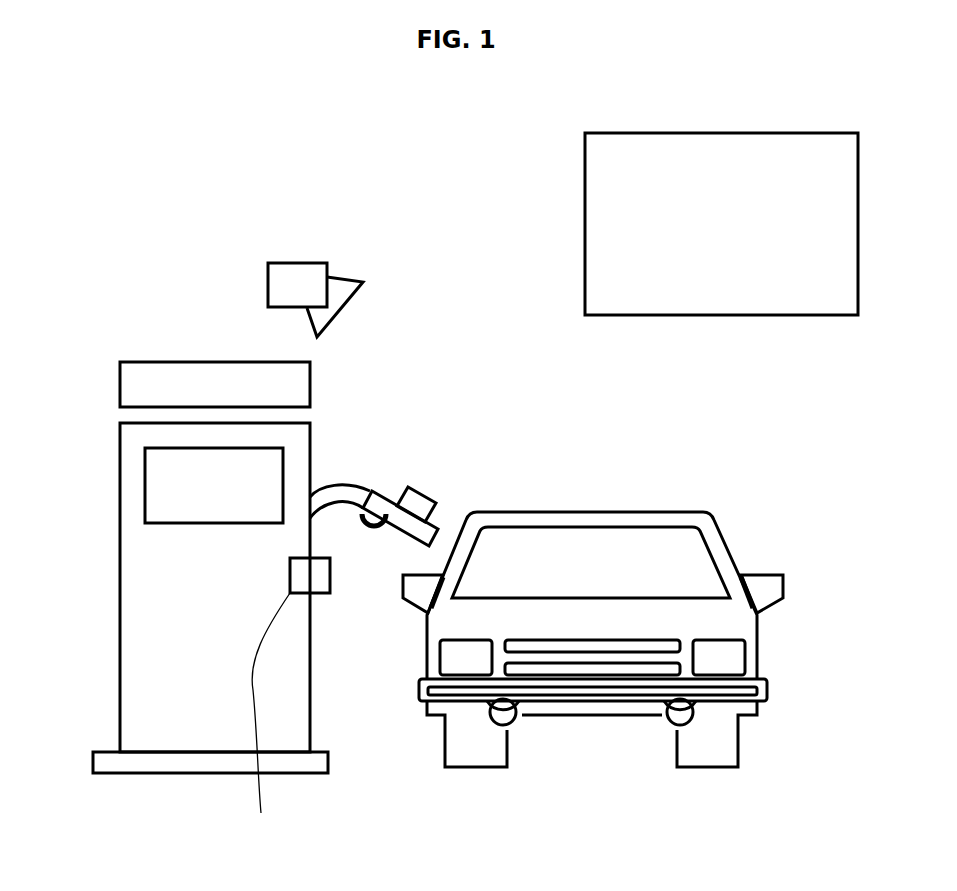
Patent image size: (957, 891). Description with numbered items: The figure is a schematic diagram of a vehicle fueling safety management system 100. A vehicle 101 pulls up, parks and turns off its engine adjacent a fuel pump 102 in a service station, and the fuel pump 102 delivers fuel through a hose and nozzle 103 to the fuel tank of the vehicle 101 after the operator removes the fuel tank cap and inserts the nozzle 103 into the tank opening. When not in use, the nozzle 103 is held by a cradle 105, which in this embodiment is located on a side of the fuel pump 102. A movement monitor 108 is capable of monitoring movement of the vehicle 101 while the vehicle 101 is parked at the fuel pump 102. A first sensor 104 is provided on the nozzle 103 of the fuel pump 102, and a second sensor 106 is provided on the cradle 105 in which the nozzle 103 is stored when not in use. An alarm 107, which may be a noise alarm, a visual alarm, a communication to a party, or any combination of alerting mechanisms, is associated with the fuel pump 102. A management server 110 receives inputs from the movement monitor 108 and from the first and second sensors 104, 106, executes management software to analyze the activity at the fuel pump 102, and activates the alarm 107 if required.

The vehicle fueling safety management system 100 is at (161, 221).
The vehicle 101 is at (668, 512).
The fuel pump 102 is at (120, 500).
The hose and nozzle 103 is at (382, 503).
The first sensor 104 is at (422, 495).
The cradle 105 is at (327, 593).
The second sensor 106 is at (258, 722).
The alarm 107 is at (277, 398).
The movement monitor 108 is at (280, 263).
The management server 110 is at (703, 221).